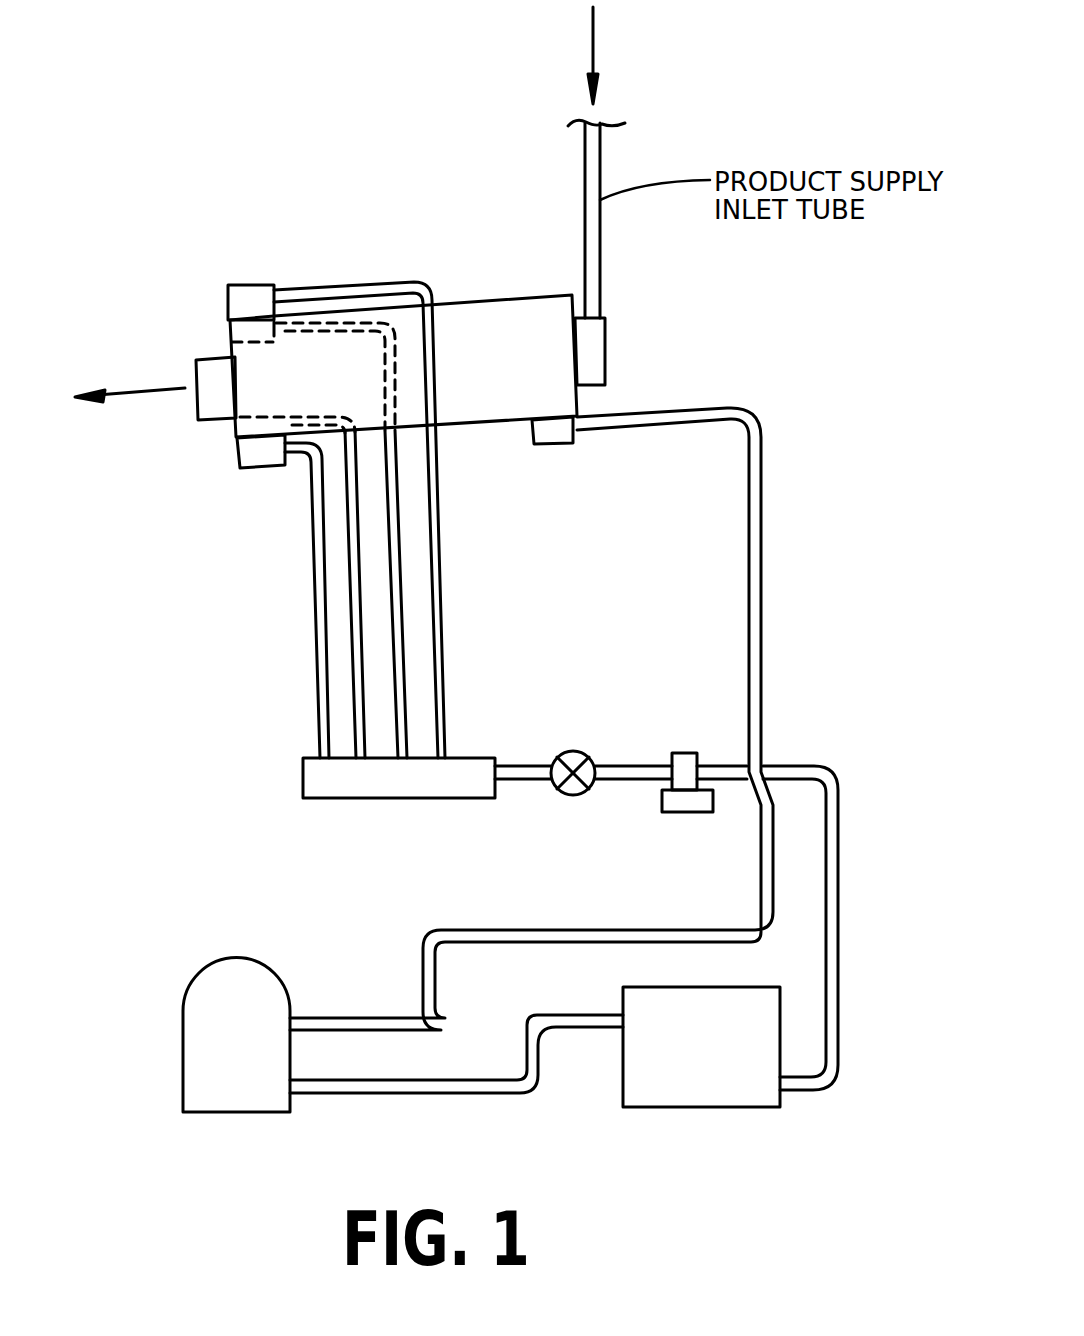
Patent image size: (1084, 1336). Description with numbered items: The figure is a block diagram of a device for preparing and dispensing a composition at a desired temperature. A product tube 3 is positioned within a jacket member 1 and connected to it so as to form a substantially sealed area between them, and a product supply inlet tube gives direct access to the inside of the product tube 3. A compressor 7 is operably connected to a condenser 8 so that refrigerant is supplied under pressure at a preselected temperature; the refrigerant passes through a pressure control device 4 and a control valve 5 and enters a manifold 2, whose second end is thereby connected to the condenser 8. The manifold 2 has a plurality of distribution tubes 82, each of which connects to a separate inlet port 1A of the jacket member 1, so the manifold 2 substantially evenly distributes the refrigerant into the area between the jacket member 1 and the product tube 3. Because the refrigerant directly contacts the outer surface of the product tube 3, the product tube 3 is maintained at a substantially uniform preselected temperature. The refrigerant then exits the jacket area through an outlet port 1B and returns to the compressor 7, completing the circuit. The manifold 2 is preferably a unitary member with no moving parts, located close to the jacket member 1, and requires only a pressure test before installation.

The jacket member 1 is at (497, 297).
The inlet port 1A is at (248, 470).
The outlet port 1B is at (560, 444).
The manifold 2 is at (303, 775).
The product tube 3 is at (605, 347).
The pressure control device 4 is at (560, 793).
The control valve 5 is at (662, 812).
The compressor 7 is at (187, 992).
The condenser 8 is at (772, 1107).
The distribution tubes 82 is at (315, 627).